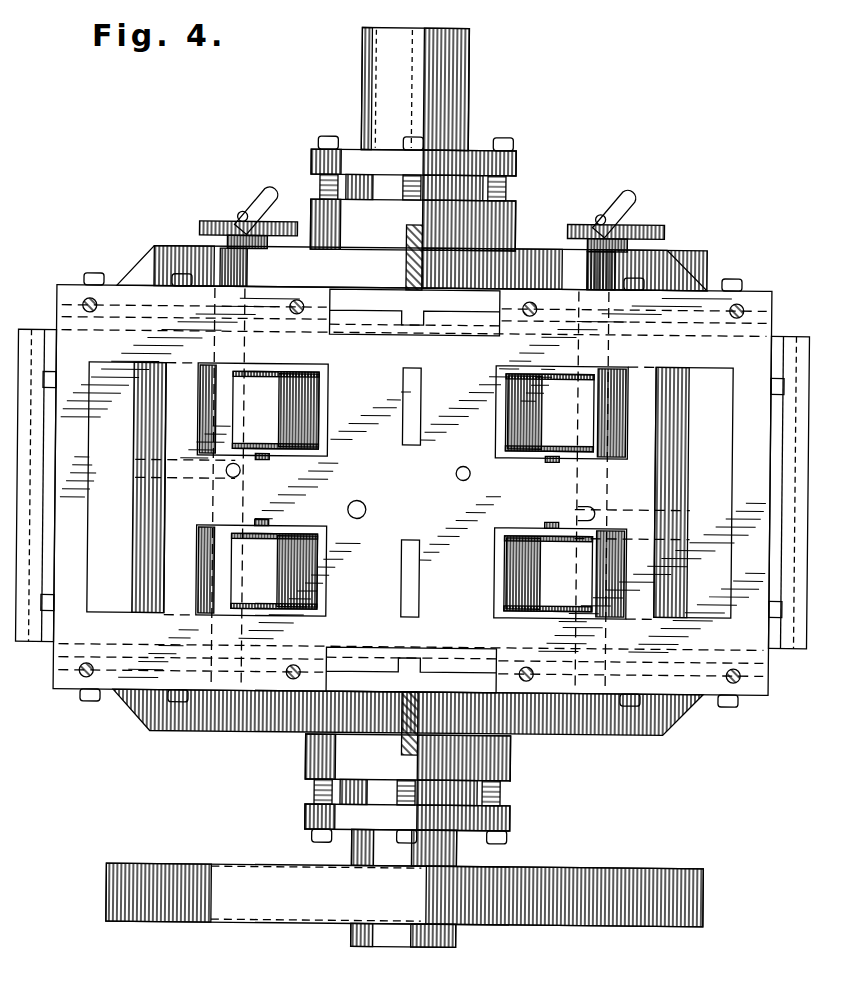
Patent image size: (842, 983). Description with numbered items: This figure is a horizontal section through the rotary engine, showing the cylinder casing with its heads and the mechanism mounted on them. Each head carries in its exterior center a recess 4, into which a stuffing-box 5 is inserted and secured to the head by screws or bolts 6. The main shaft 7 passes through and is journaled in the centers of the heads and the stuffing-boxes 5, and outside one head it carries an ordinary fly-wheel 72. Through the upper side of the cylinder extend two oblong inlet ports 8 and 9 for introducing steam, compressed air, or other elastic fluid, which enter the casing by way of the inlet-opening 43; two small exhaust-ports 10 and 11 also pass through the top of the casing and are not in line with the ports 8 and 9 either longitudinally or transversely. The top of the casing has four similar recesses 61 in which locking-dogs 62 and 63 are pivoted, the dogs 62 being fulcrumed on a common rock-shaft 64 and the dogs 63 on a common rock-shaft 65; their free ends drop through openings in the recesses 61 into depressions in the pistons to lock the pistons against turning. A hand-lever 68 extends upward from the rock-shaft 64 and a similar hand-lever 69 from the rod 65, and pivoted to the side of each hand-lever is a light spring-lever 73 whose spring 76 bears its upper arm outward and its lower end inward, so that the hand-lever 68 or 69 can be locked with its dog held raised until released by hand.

The recess 4 is at (513, 225).
The stuffing-box 5 is at (513, 162).
The screws or bolts 6 is at (513, 190).
The main shaft 7 is at (465, 98).
The inlet port 8 is at (408, 572).
The inlet port 9 is at (408, 393).
The exhaust-port 10 is at (463, 470).
The exhaust-port 11 is at (362, 516).
The inlet-opening 43 is at (630, 198).
The recesses 61 is at (300, 458).
The locking-dog 62 is at (561, 492).
The locking-dog 63 is at (262, 489).
The rock-shaft 64 is at (595, 270).
The rock-shaft 65 is at (220, 245).
The hand-lever 68 is at (660, 226).
The hand-lever 69 is at (262, 222).
The fly-wheel 72 is at (600, 917).
The spring-lever 73 is at (266, 198).
The spring 76 is at (238, 214).